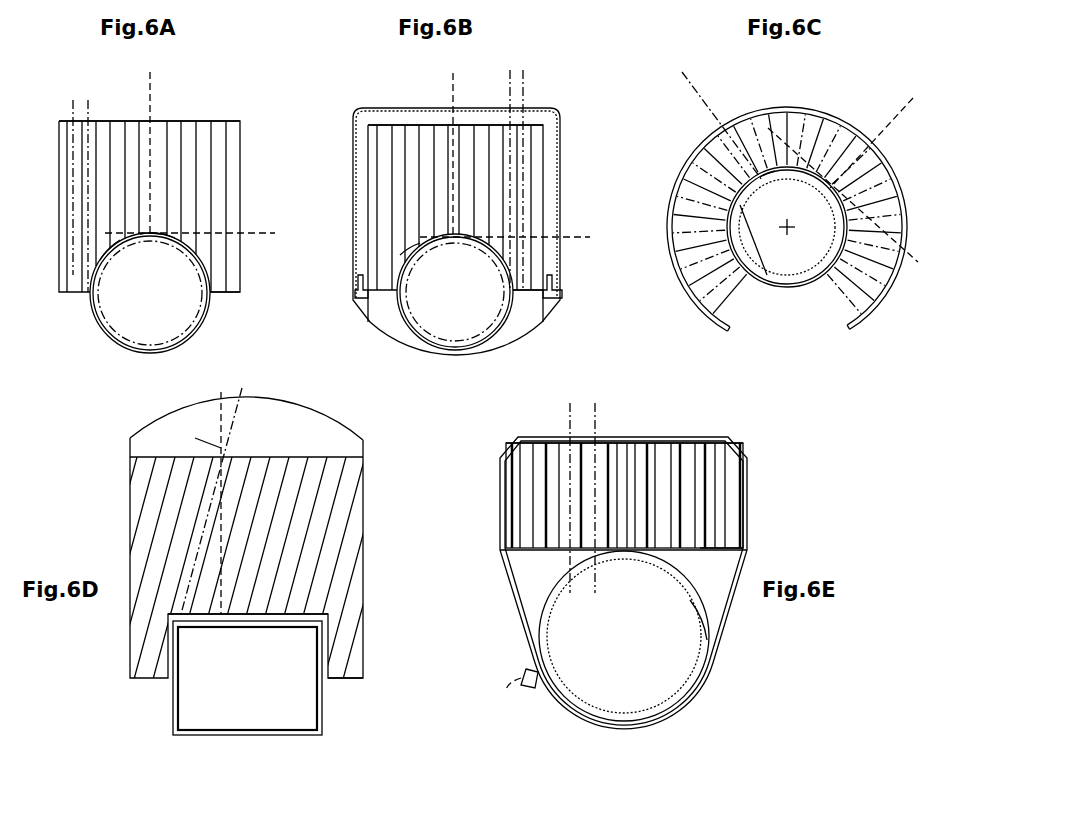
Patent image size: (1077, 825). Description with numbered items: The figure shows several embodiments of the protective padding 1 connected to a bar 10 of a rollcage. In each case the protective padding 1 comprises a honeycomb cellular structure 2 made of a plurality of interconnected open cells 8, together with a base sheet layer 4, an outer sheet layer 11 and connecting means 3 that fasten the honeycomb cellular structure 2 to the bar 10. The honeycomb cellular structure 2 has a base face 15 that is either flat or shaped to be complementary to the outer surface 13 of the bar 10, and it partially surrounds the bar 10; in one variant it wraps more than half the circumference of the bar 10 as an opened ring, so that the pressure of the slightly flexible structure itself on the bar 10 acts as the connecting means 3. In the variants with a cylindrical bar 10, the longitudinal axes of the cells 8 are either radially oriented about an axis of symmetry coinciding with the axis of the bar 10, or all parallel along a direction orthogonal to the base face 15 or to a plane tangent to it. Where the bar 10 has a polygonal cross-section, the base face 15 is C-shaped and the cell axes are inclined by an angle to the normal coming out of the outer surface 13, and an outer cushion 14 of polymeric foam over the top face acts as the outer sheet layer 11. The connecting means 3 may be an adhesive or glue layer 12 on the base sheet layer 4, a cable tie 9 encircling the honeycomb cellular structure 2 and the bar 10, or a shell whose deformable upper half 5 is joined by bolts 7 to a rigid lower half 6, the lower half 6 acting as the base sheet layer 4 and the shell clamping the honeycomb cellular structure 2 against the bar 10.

In FIG. 6A, the protective padding 1 is at (259, 126).
In FIG. 6B, the protective padding 1 is at (563, 103).
In FIG. 6C, the protective padding 1 is at (841, 97).
In FIG. 6D, the protective padding 1 is at (348, 694).
In FIG. 6E, the protective padding 1 is at (766, 498).
In FIG. 6A, the honeycomb cellular structure 2 is at (54, 191).
In FIG. 6B, the honeycomb cellular structure 2 is at (572, 176).
In FIG. 6C, the honeycomb cellular structure 2 is at (713, 153).
In FIG. 6D, the honeycomb cellular structure 2 is at (125, 470).
In FIG. 6E, the honeycomb cellular structure 2 is at (735, 534).
In FIG. 6A, the connecting means 3 is at (171, 242).
In FIG. 6B, the connecting means 3 is at (558, 323).
In FIG. 6C, the connecting means 3 is at (769, 180).
In FIG. 6D, the connecting means 3 is at (247, 633).
In FIG. 6E, the connecting means 3 is at (513, 624).
In FIG. 6A, the base sheet layer 4 is at (228, 292).
In FIG. 6B, the base sheet layer 4 is at (523, 291).
In FIG. 6C, the base sheet layer 4 is at (768, 278).
In FIG. 6D, the base sheet layer 4 is at (338, 677).
In FIG. 6E, the base sheet layer 4 is at (702, 551).
In FIG. 6B, the upper half 5 is at (553, 150).
In FIG. 6B, the lower half 6 is at (534, 322).
In FIG. 6B, the bolts 7 is at (355, 299).
In FIG. 6A, the cells 8 is at (215, 182).
In FIG. 6B, the cells 8 is at (410, 165).
In FIG. 6C, the cells 8 is at (703, 265).
In FIG. 6D, the cells 8 is at (153, 525).
In FIG. 6E, the cells 8 is at (615, 470).
In FIG. 6E, the cable tie 9 is at (527, 664).
In FIG. 6A, the bar 10 is at (121, 350).
In FIG. 6B, the bar 10 is at (440, 342).
In FIG. 6C, the bar 10 is at (810, 284).
In FIG. 6D, the bar 10 is at (195, 731).
In FIG. 6E, the bar 10 is at (622, 718).
In FIG. 6A, the outer sheet layer 11 is at (170, 120).
In FIG. 6B, the outer sheet layer 11 is at (473, 125).
In FIG. 6C, the outer sheet layer 11 is at (677, 197).
In FIG. 6E, the outer sheet layer 11 is at (665, 443).
In FIG. 6A, the adhesive or glue layer 12 is at (160, 236).
In FIG. 6C, the outer surface of the bar 13 is at (806, 278).
In FIG. 6D, the outer surface of the bar 13 is at (172, 691).
In FIG. 6E, the outer surface of the bar 13 is at (543, 603).
In FIG. 6D, the outer cushion 14 is at (273, 425).
In FIG. 6A, the base face 15 is at (125, 252).
In FIG. 6B, the base face 15 is at (406, 316).
In FIG. 6D, the base face 15 is at (277, 623).
In FIG. 6E, the base face 15 is at (706, 647).